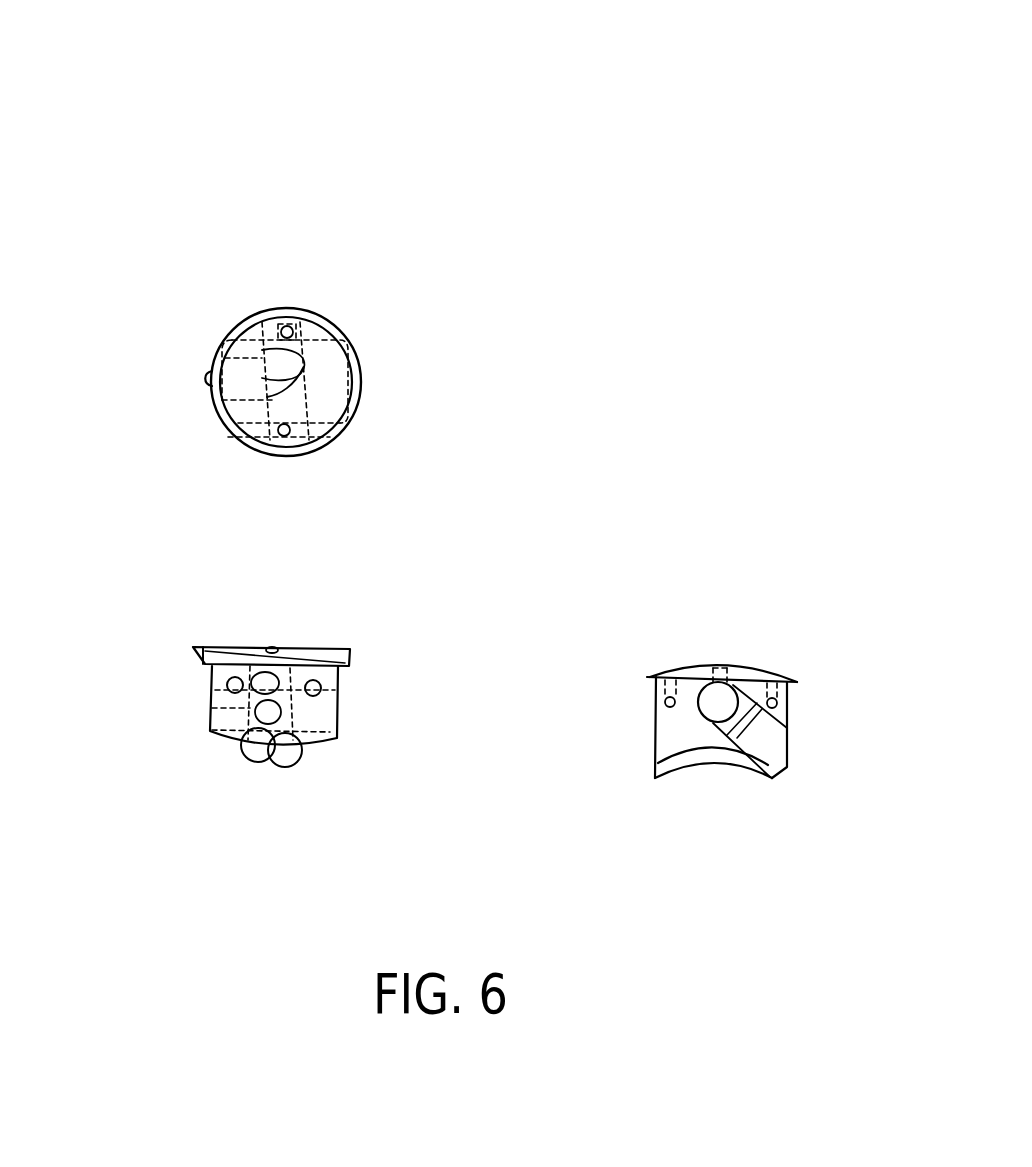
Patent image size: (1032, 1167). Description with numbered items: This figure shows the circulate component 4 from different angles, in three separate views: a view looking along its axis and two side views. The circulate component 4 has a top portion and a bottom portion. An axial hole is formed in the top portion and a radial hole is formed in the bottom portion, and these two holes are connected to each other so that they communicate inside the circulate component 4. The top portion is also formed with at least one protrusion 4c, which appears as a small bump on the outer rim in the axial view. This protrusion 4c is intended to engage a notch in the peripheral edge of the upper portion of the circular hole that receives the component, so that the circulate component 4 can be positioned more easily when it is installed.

The circulate component 4 is at (253, 305).
The protrusion 4c is at (207, 368).